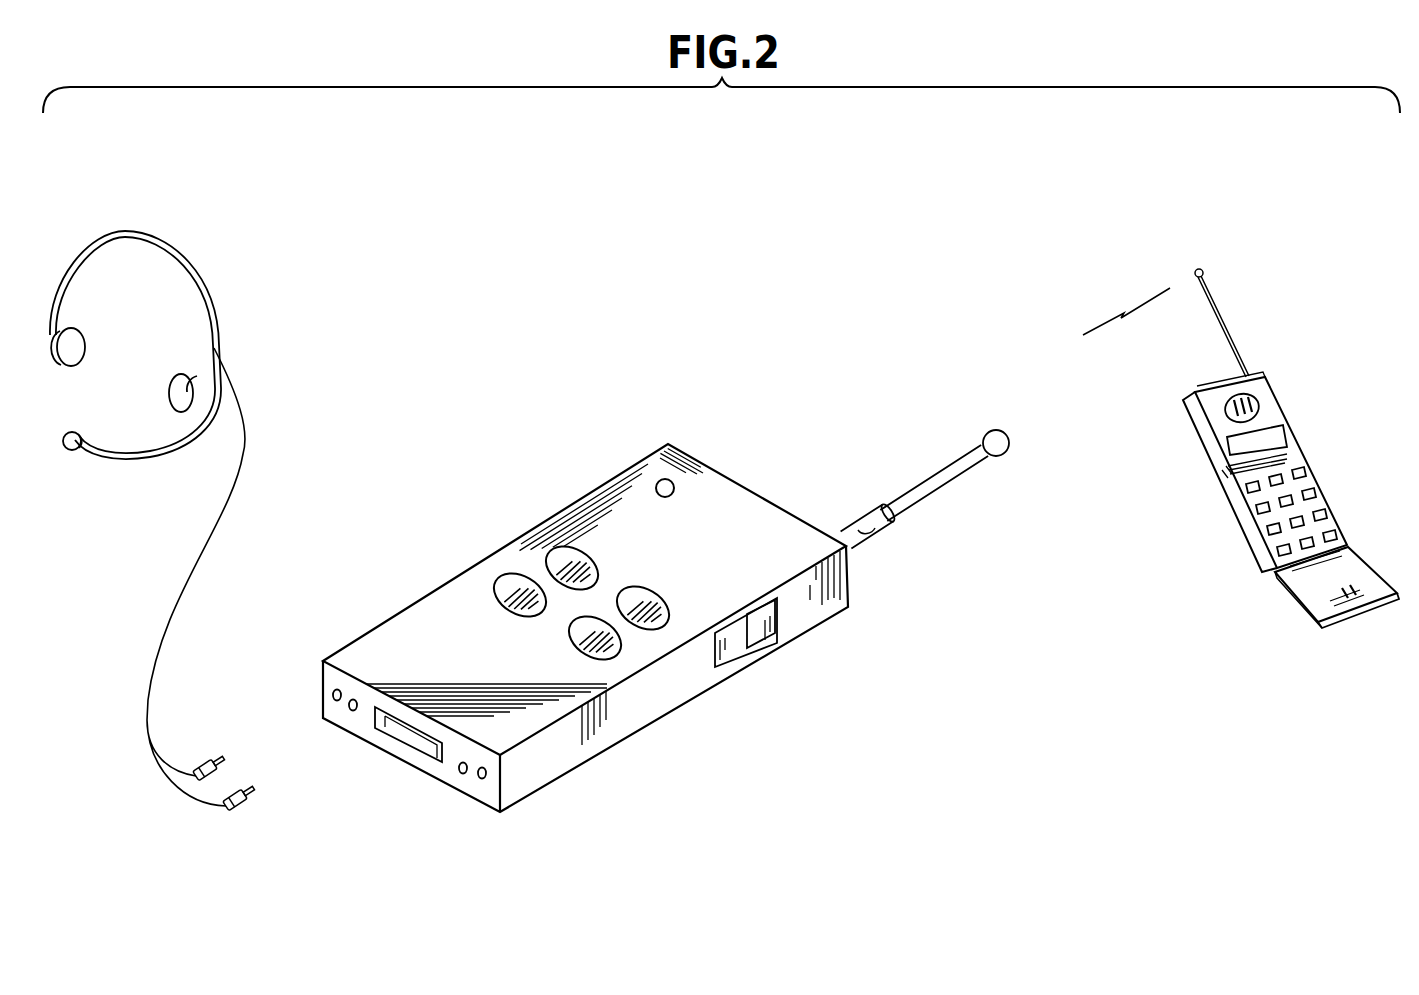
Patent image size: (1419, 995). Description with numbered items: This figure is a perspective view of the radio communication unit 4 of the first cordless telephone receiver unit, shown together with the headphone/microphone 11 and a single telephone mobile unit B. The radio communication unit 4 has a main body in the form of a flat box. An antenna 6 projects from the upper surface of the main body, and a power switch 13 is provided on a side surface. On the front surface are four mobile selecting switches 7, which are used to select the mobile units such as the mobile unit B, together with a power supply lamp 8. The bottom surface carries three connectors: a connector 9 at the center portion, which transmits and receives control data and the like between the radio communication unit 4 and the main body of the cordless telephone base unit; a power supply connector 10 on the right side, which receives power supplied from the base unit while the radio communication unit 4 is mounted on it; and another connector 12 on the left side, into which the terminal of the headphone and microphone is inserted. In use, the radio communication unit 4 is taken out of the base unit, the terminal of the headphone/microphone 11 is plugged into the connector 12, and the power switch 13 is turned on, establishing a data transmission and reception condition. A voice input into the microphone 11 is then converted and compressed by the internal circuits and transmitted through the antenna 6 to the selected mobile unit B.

The headphone/microphone 11 is at (184, 262).
The radio communication unit 4 is at (753, 483).
The mobile selecting switches 7 is at (500, 578).
The power supply lamp 8 is at (660, 482).
The power switch 13 is at (770, 631).
The connector 12 is at (343, 707).
The connector 9 is at (402, 737).
The power supply connector 10 is at (472, 777).
The antenna 6 is at (960, 472).
The mobile unit B is at (1288, 408).